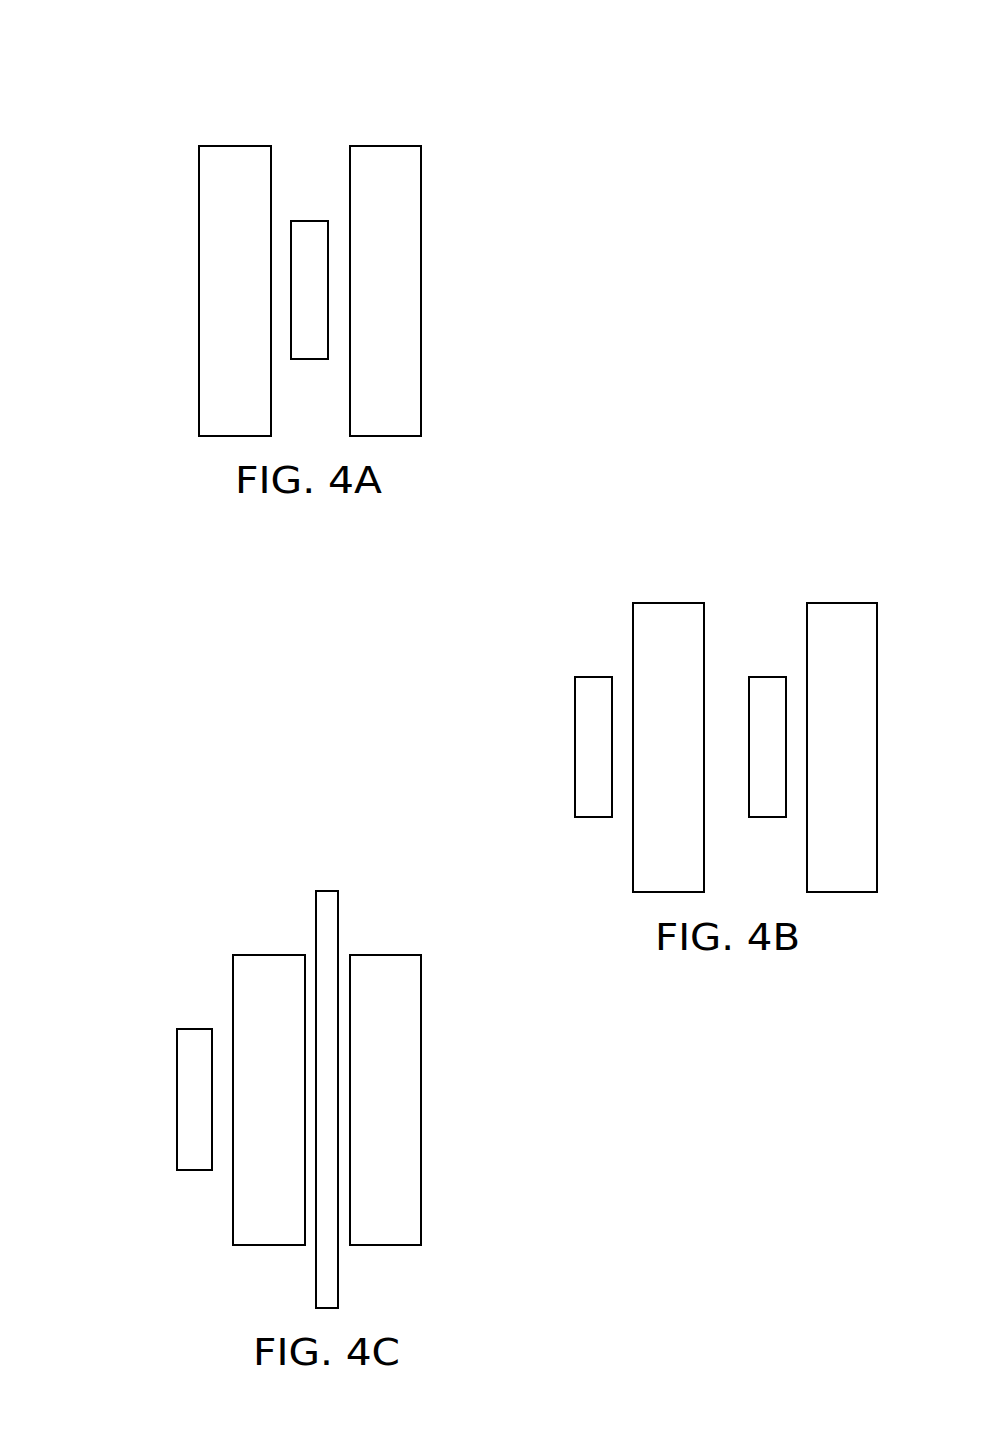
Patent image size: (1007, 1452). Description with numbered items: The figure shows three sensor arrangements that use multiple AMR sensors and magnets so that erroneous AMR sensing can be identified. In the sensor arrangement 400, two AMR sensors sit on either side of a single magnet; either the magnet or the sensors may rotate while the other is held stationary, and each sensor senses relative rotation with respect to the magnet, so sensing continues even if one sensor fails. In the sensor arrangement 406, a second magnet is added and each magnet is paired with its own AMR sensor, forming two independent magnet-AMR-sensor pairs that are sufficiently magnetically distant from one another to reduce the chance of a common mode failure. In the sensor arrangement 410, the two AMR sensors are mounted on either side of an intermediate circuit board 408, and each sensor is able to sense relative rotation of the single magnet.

In FIG. 4A, the sensor arrangement 400 is at (222, 96).
In FIG. 4B, the sensor arrangement 406 is at (813, 554).
In FIG. 4C, the intermediate circuit board 408 is at (339, 928).
In FIG. 4C, the sensor arrangement 410 is at (291, 874).